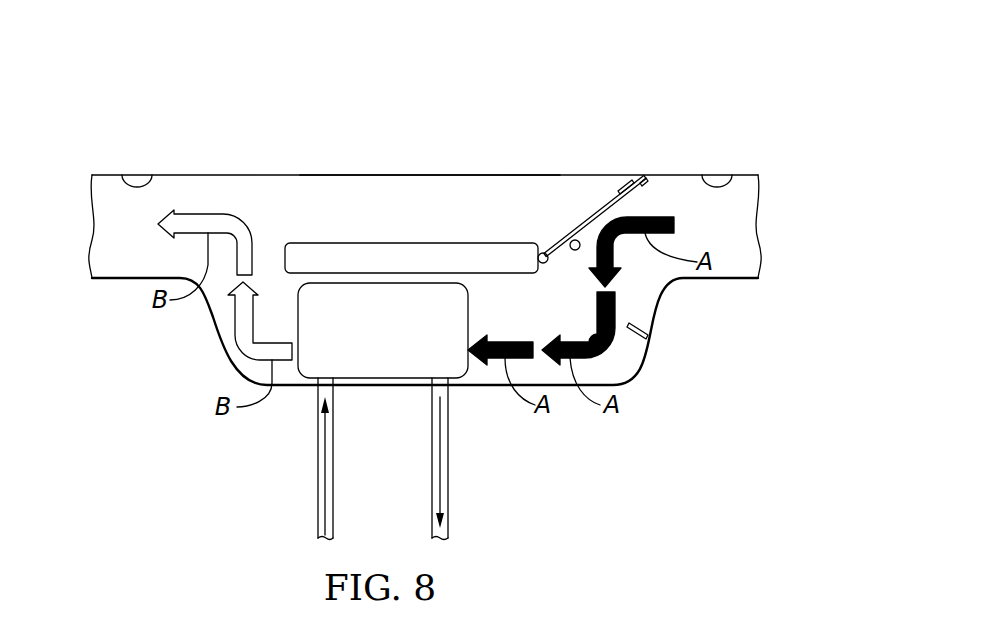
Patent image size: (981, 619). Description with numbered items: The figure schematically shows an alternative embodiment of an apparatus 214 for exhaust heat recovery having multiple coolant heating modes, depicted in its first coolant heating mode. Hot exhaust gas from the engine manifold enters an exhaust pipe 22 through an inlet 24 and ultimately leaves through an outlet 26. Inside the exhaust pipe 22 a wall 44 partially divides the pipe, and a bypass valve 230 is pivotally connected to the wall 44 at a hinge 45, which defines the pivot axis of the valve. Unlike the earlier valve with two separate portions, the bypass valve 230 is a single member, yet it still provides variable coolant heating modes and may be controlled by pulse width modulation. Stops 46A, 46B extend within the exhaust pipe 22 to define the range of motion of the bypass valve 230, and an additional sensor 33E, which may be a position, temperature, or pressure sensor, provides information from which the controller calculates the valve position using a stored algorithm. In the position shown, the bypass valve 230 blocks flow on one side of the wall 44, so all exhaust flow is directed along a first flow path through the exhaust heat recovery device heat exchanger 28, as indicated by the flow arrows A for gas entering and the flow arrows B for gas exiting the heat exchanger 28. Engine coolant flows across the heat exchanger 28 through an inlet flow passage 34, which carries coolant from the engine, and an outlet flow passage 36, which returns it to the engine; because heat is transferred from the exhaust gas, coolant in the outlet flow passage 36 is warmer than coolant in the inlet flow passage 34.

The apparatus for exhaust heat recovery 214 is at (437, 62).
The exhaust pipe 22 is at (428, 175).
The inlet 24 is at (728, 177).
The outlet 26 is at (123, 176).
The exhaust heat recovery device heat exchanger 28 is at (383, 330).
The inlet flow passage 34 is at (317, 447).
The outlet flow passage 36 is at (448, 458).
The wall 44 is at (412, 242).
The hinge 45 is at (543, 252).
The bypass valve 230 is at (602, 207).
The sensor 33E is at (575, 251).
The stop 46A is at (650, 176).
The stop 46B is at (653, 320).